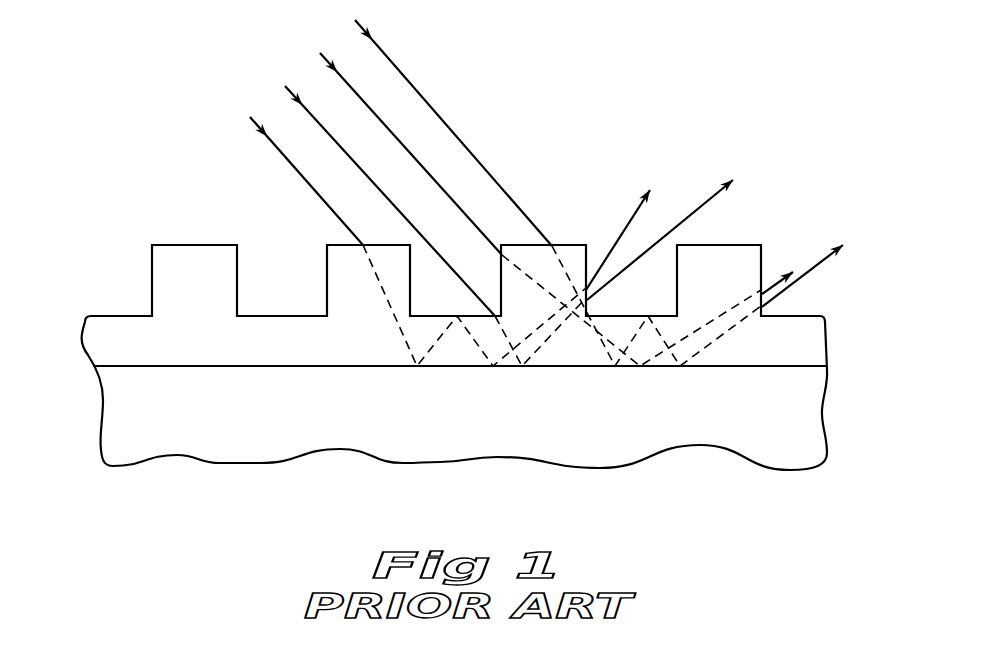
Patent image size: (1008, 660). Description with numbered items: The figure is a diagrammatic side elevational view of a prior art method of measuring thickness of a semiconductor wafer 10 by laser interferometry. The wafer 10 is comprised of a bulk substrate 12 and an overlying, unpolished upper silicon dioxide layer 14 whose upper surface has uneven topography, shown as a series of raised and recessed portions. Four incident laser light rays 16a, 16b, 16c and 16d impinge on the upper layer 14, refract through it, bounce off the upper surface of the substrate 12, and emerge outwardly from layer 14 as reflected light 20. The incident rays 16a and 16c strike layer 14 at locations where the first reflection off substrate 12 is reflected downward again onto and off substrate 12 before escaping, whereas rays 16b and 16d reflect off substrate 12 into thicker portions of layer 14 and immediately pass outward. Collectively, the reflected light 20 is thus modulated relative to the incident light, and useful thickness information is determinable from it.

The semiconductor wafer 10 is at (825, 163).
The bulk substrate 12 is at (132, 417).
The upper silicon dioxide layer 14 is at (122, 342).
The incident laser light ray 16a is at (289, 161).
The incident laser light ray 16b is at (317, 123).
The incident laser light ray 16c is at (349, 85).
The incident laser light ray 16d is at (398, 70).
The reflected light 20 is at (619, 232).